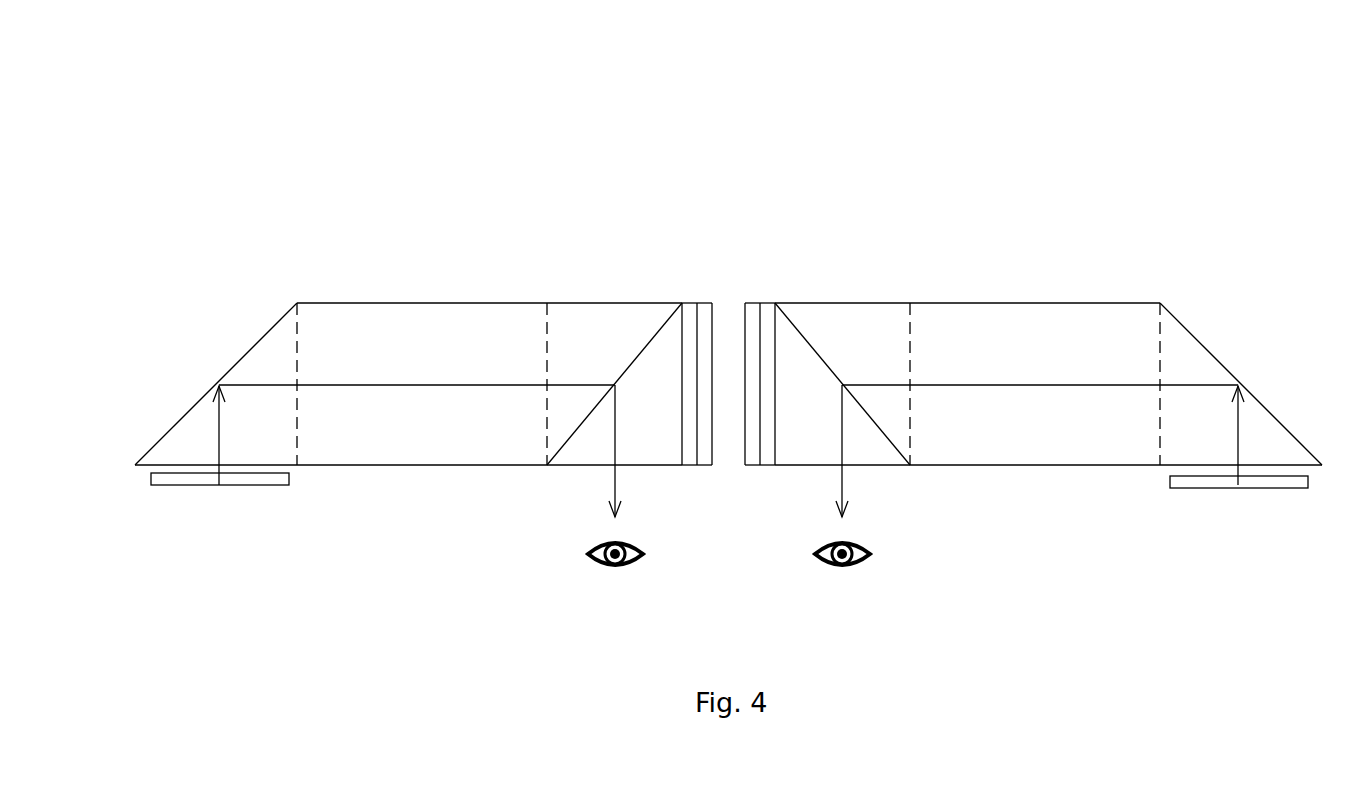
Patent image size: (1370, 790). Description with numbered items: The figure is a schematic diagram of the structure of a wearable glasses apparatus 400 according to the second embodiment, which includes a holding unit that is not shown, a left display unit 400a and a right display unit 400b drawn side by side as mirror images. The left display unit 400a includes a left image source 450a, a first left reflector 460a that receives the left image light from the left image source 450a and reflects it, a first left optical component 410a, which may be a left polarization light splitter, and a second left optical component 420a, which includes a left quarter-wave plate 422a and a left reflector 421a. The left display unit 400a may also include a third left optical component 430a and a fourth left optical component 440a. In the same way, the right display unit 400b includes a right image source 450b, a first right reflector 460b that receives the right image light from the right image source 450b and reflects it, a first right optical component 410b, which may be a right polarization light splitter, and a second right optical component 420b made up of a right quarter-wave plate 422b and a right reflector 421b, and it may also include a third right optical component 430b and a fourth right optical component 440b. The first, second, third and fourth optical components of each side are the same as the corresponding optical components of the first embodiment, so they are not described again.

The wearable glasses apparatus 400 is at (288, 74).
The left display unit 400a is at (472, 177).
The right display unit 400b is at (1066, 177).
The first left optical component 410a is at (635, 357).
The first right optical component 410b is at (822, 358).
The second left optical component 420a is at (712, 297).
The second right optical component 420b is at (779, 297).
The left reflector 421a is at (705, 463).
The right reflector 421b is at (752, 465).
The left quarter-wave plate 422a is at (688, 312).
The right quarter-wave plate 422b is at (769, 312).
The third left optical component 430a is at (423, 333).
The third right optical component 430b is at (1035, 335).
The fourth left optical component 440a is at (648, 447).
The fourth right optical component 440b is at (810, 447).
The left image source 450a is at (173, 485).
The right image source 450b is at (1290, 490).
The first left reflector 460a is at (247, 352).
The first right reflector 460b is at (1218, 360).